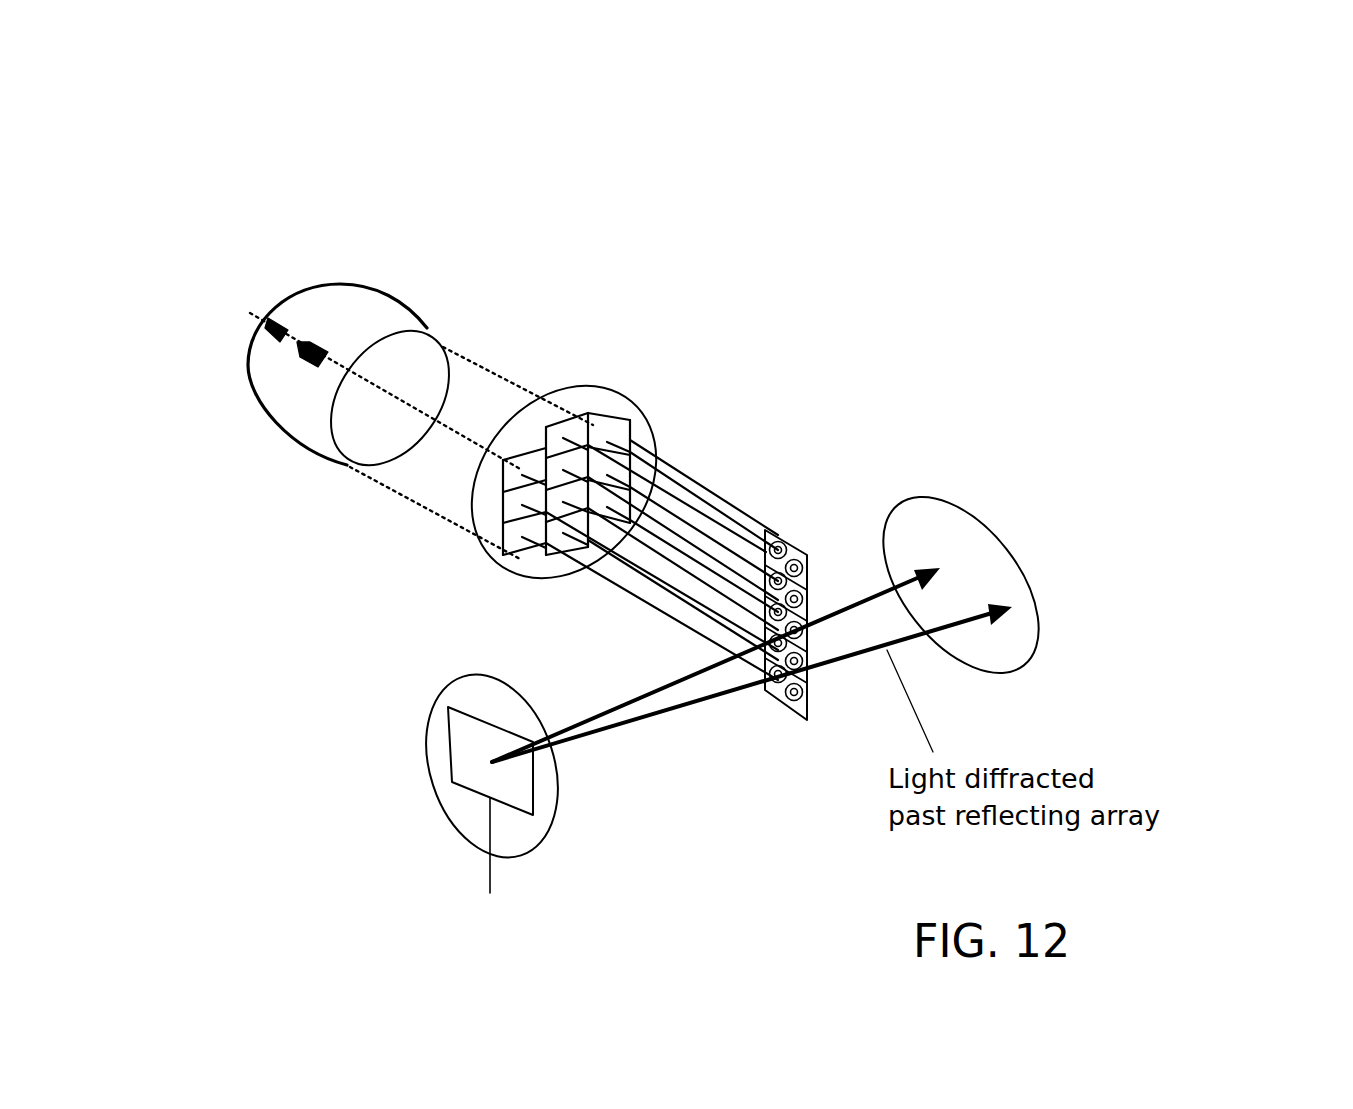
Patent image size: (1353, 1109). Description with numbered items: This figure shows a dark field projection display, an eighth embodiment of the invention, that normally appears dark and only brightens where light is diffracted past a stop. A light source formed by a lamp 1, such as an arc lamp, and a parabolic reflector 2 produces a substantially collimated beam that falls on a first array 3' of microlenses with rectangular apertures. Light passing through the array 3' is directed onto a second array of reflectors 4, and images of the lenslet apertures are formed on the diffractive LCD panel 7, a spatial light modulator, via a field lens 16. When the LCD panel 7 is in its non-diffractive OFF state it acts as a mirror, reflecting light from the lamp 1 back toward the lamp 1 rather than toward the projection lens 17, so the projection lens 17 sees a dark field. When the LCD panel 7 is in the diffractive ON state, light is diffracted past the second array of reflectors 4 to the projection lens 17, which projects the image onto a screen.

The lamp 1 is at (296, 336).
The parabolic reflector 2 is at (307, 442).
The array of microlenses with rectangular apertures 3' is at (648, 415).
The second array of reflectors 4 is at (792, 530).
The LCD panel 7 is at (518, 788).
The field lens 16 is at (420, 720).
The projection lens 17 is at (1060, 614).